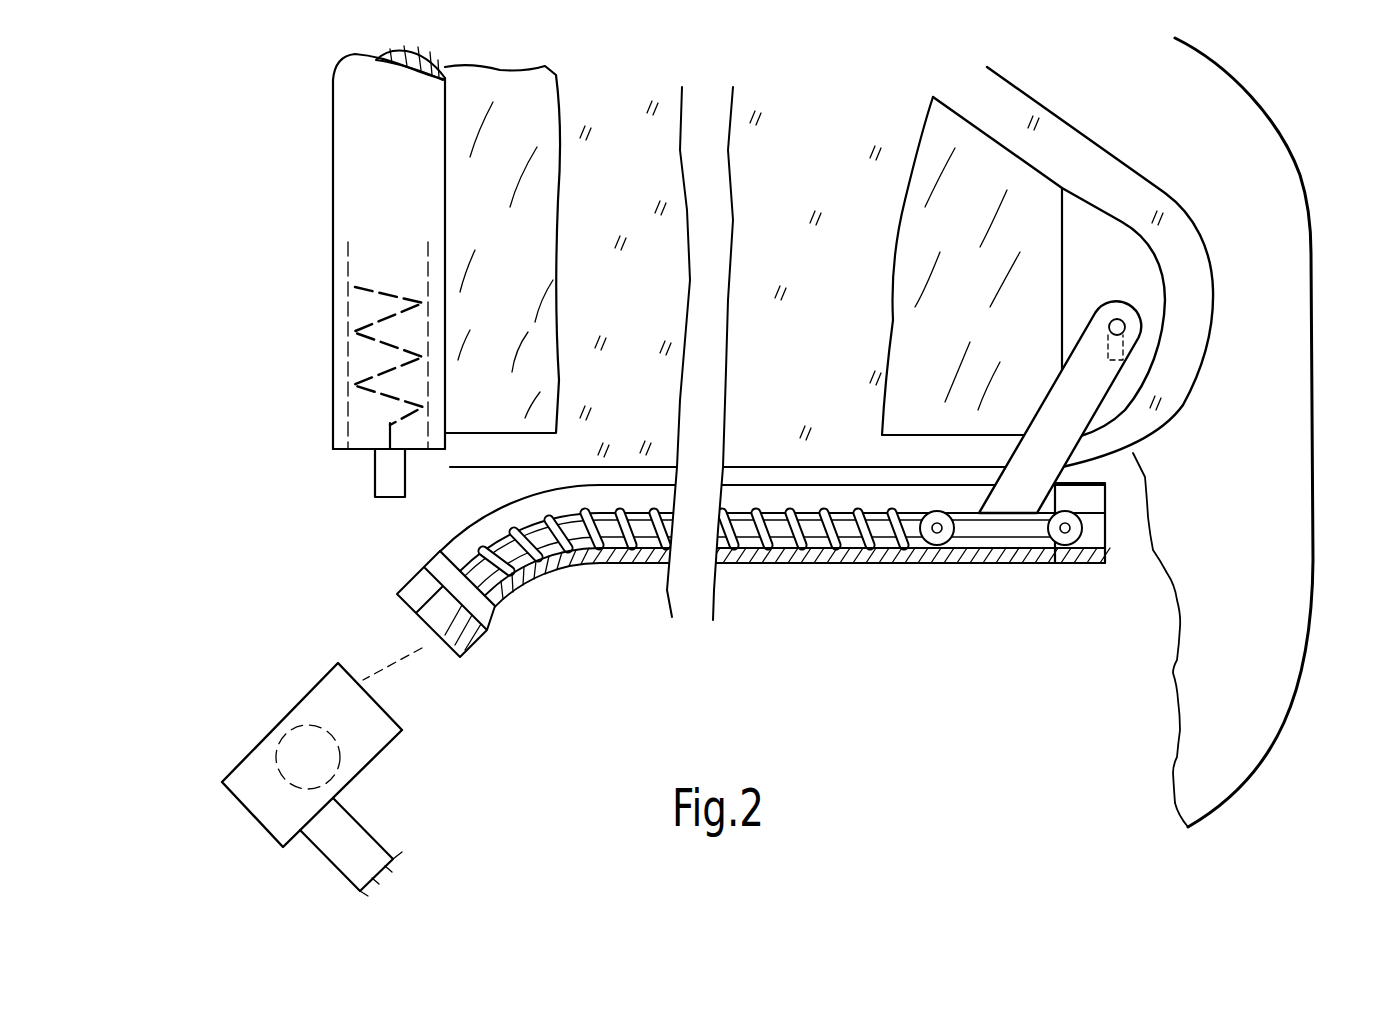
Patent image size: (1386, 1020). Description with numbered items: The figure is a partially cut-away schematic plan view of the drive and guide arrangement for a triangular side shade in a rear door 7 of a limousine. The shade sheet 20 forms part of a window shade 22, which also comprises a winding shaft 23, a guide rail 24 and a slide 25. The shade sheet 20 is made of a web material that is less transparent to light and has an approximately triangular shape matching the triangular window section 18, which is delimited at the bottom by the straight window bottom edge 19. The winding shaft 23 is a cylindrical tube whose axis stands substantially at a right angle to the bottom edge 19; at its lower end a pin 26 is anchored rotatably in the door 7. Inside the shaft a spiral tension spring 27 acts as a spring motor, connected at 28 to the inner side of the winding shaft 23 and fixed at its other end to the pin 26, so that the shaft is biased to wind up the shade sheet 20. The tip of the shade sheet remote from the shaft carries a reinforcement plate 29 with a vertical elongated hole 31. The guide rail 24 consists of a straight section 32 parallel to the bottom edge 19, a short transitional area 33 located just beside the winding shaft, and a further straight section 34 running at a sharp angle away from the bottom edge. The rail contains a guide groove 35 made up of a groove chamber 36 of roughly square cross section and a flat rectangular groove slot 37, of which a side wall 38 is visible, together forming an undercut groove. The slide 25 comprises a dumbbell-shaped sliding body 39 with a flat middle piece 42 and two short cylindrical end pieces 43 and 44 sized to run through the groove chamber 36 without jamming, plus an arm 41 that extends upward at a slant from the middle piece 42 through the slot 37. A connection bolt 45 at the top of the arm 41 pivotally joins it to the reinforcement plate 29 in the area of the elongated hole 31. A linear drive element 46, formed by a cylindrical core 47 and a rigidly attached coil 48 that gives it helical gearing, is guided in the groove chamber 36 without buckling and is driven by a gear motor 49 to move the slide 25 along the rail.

The door 7 is at (1278, 130).
The triangular window section 18 is at (1207, 257).
The window bottom edge 19 is at (815, 463).
The shade sheet 20 is at (1030, 188).
The window shade 22 is at (232, 552).
The winding shaft 23 is at (333, 87).
The guide rail 24 is at (1128, 523).
The slide 25 is at (1097, 453).
The pin 26 is at (378, 478).
The spiral tension spring 27 is at (400, 293).
The connection of spring to winding shaft 28 is at (353, 287).
The reinforcement plate 29 is at (1100, 227).
The elongated hole 31 is at (1118, 352).
The straight section of guide rail 32 is at (898, 683).
The transitional area 33 is at (557, 595).
The angled straight section of guide rail 34 is at (470, 650).
The guide groove 35 is at (1123, 555).
The groove chamber 36 is at (1083, 537).
The groove slot 37 is at (1093, 498).
The side wall of groove slot 38 is at (823, 493).
The sliding body 39 is at (985, 558).
The arm 41 is at (1043, 440).
The middle piece 42 is at (1018, 530).
The end piece 43 is at (905, 548).
The end piece 44 is at (1105, 545).
The connection bolt 45 is at (1110, 319).
The linear drive element 46 is at (490, 535).
The cylindrical core 47 is at (655, 590).
The coil 48 is at (621, 557).
The gear motor 49 is at (205, 735).